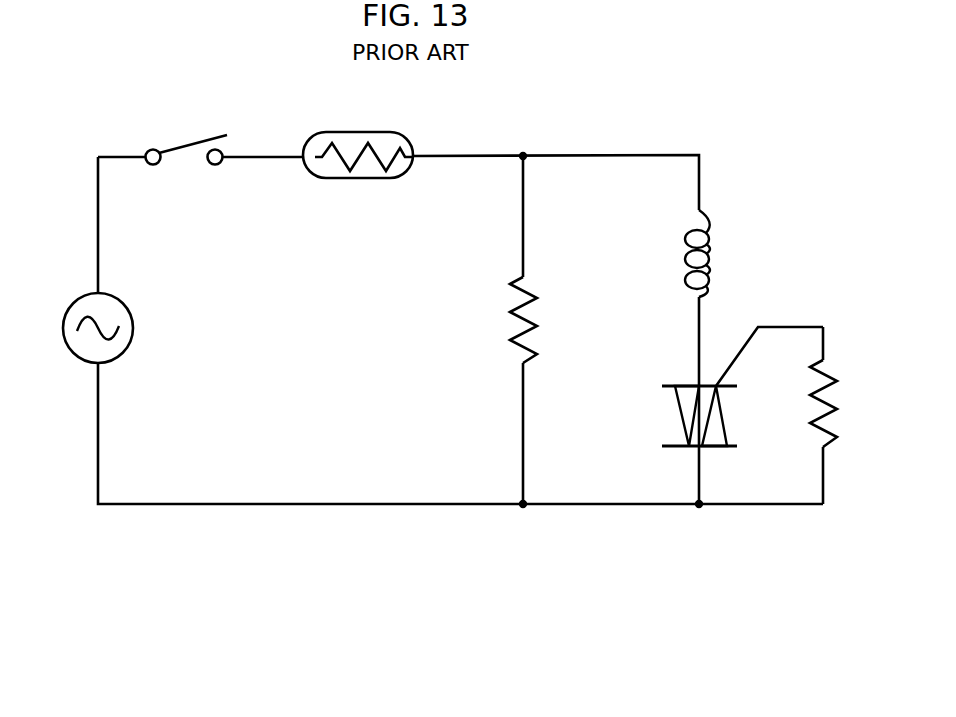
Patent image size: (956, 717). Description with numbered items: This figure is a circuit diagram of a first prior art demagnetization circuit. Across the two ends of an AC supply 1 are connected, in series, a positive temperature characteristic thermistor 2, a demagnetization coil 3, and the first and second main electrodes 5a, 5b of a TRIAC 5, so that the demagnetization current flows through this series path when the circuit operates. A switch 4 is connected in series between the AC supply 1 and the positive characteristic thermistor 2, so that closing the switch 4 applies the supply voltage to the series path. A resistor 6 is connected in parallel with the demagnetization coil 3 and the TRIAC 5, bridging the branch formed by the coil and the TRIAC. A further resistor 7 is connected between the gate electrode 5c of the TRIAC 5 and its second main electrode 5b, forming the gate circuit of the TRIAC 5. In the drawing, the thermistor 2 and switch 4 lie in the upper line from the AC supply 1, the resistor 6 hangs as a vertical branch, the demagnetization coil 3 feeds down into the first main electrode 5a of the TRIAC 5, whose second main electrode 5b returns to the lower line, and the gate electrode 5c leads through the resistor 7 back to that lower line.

The AC supply 1 is at (82, 300).
The positive characteristic thermistor 2 is at (375, 130).
The demagnetization coil 3 is at (712, 266).
The switch 4 is at (202, 140).
The TRIAC 5 is at (717, 403).
The first main electrode 5a is at (695, 384).
The second main electrode 5b is at (692, 448).
The gate electrode 5c is at (720, 385).
The resistor 6 is at (533, 334).
The resistor 7 is at (836, 418).